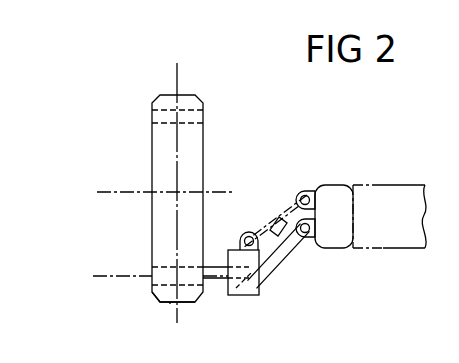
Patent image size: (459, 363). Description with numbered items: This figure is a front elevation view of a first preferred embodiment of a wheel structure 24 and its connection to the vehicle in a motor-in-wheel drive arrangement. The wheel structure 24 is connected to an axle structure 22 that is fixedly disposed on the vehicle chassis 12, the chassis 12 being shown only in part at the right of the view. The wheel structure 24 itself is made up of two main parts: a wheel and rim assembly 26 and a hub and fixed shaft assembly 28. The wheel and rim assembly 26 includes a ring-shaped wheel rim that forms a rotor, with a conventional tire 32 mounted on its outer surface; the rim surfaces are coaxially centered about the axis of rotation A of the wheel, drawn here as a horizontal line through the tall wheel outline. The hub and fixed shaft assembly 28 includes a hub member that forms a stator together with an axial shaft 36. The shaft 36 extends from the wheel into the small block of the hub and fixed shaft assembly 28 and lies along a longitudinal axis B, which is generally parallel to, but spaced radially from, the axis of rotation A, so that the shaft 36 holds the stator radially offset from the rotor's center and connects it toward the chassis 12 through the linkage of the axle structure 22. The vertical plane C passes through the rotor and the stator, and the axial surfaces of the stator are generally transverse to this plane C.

The chassis 12 is at (381, 185).
The axle structure 22 is at (295, 250).
The wheel structure 24 is at (152, 121).
The wheel and rim assembly 26 is at (154, 292).
The hub and fixed shaft assembly 28 is at (259, 297).
The tire 32 is at (170, 304).
The axial shaft 36 is at (216, 279).
The axis of rotation A is at (110, 192).
The longitudinal axis B is at (107, 275).
The vertical plane C is at (175, 82).